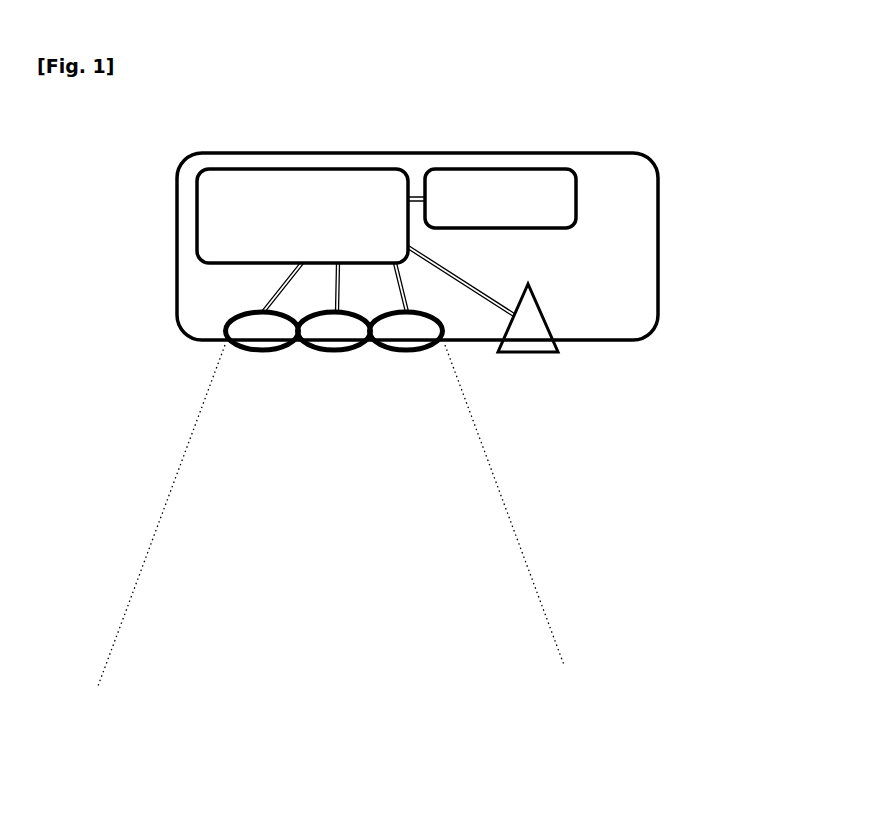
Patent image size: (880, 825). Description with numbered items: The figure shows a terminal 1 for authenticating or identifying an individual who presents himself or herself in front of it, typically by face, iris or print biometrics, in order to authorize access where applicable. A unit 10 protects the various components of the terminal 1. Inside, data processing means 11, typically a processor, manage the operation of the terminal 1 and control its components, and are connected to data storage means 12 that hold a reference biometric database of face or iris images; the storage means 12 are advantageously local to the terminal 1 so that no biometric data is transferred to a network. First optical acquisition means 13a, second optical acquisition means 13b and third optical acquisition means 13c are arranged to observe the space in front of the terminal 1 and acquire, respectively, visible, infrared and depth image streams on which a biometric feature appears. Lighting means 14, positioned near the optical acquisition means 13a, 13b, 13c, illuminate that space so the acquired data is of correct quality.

The terminal 1 is at (126, 231).
The unit 10 is at (166, 164).
The data processing means 11 is at (264, 160).
The data storage means 12 is at (588, 187).
The first optical acquisition means 13a is at (213, 321).
The second optical acquisition means 13b is at (340, 361).
The third optical acquisition means 13c is at (428, 361).
The lighting means 14 is at (541, 362).